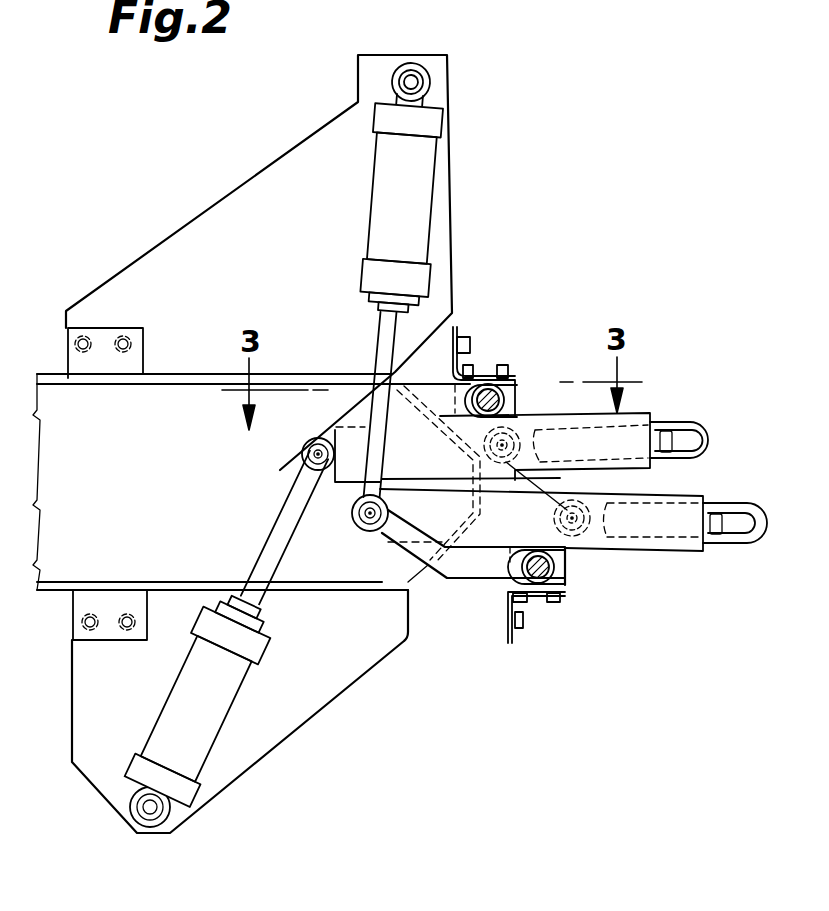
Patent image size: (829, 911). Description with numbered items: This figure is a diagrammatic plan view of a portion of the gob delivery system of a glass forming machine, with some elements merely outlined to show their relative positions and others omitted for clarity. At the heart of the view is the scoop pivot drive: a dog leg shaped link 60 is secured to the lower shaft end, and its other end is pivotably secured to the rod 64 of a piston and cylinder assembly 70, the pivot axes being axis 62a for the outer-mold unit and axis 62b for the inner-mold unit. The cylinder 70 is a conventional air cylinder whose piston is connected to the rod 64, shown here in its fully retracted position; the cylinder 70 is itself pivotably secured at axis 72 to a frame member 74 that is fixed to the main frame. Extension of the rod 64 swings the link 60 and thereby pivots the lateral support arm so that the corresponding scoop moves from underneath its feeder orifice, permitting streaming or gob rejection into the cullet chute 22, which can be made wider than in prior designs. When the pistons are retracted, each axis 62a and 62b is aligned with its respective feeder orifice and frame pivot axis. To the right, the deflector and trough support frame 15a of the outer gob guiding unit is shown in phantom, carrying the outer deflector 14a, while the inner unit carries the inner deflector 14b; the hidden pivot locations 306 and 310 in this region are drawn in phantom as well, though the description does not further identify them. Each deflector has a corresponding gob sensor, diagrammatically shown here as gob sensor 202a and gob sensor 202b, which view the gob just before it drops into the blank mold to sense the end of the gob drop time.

The cullet chute 22 is at (130, 503).
The dog leg shaped link 60 is at (362, 420).
The axis 62a is at (286, 466).
The axis 62b is at (359, 521).
The rod 64 is at (276, 534).
The piston and cylinder assembly 70 is at (183, 692).
The axis 72 is at (156, 811).
The frame member 74 is at (303, 727).
The pivot pin 306 is at (515, 432).
The pivot pin 310 is at (530, 478).
The deflector and trough support frame 15a is at (641, 415).
The deflector 14a is at (716, 440).
The gob sensor 202a is at (666, 440).
The deflector 14b is at (760, 540).
The gob sensor 202b is at (718, 536).